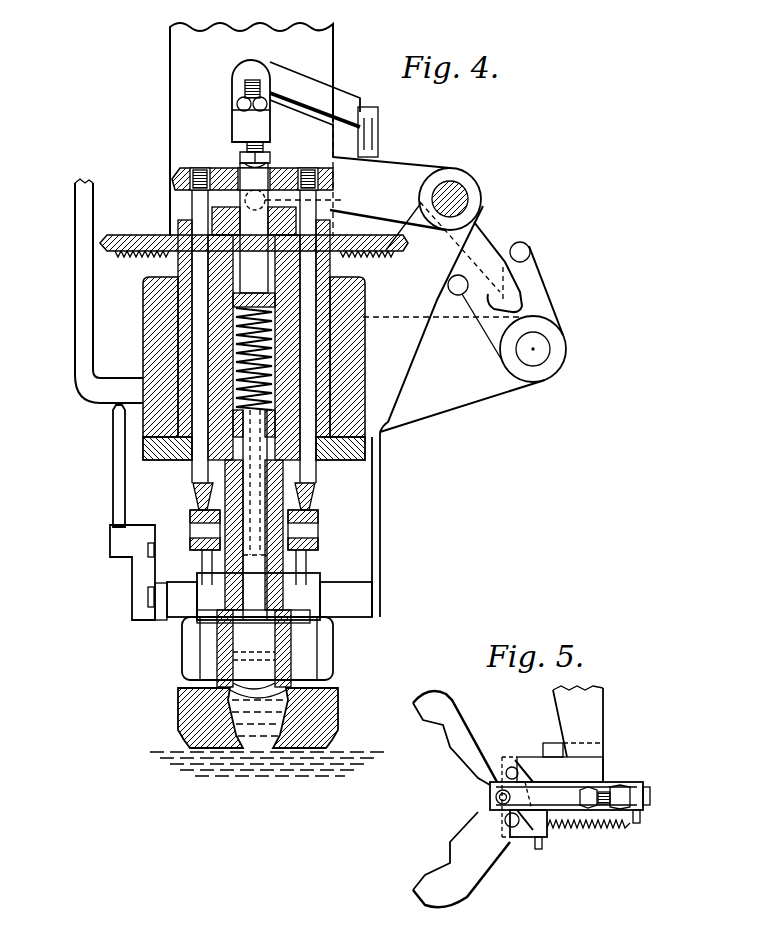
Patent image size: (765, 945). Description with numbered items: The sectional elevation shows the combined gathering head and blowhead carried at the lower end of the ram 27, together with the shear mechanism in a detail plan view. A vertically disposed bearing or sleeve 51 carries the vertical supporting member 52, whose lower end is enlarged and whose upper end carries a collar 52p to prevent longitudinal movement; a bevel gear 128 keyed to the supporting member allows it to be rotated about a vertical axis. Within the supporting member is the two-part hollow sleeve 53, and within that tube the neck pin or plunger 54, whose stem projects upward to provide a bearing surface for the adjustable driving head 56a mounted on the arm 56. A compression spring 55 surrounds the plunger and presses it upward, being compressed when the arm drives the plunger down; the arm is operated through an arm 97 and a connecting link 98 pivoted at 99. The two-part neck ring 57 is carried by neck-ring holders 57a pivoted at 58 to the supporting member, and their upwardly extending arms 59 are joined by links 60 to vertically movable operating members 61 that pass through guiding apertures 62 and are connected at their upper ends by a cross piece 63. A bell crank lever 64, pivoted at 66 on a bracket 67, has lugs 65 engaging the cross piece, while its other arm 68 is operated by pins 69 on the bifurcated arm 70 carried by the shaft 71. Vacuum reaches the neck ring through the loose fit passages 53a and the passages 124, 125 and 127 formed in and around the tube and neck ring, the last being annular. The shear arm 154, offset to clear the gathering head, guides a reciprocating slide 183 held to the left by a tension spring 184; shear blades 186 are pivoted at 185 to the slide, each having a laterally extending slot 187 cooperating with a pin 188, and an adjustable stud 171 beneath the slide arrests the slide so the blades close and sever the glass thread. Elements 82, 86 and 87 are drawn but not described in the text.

In FIG. 4, the ram 27 is at (172, 40).
In FIG. 4, the arm 56 is at (288, 80).
In FIG. 4, the adjustable driving head 56a is at (268, 160).
In FIG. 4, the pivot 99 is at (378, 125).
In FIG. 4, the bell crank lever 64 is at (416, 172).
In FIG. 4, the pivot 66 is at (458, 202).
In FIG. 4, the lugs 65 is at (305, 200).
In FIG. 4, the bracket 67 is at (420, 340).
In FIG. 4, the other arm of bell crank lever 68 is at (488, 248).
In FIG. 4, the pins 69 is at (530, 250).
In FIG. 4, the bifurcated arm 70 is at (535, 298).
In FIG. 4, the shaft 71 is at (537, 350).
In FIG. 4, the collar 52p is at (346, 294).
In FIG. 4, the bevel gear 128 is at (133, 230).
In FIG. 4, the cross piece 63 is at (178, 172).
In FIG. 4, the guiding apertures 62 is at (166, 324).
In FIG. 4, the two-part hollow member or sleeve 53 is at (292, 362).
In FIG. 4, the vertical supporting member 52 is at (300, 350).
In FIG. 4, the neck pin or plunger 54 is at (262, 552).
In FIG. 4, the vertically disposed bearing or sleeve 51 is at (290, 338).
In FIG. 4, the compression spring 55 is at (262, 374).
In FIG. 4, the vertically movable operating members 61 is at (194, 478).
In FIG. 4, the passages 53a is at (220, 485).
In FIG. 4, the links 60 is at (190, 520).
In FIG. 4, the pivot 58 is at (322, 584).
In FIG. 4, the upwardly extending arms 59 is at (215, 566).
In FIG. 4, the arm 97 is at (362, 617).
In FIG. 4, the connecting link 98 is at (376, 504).
In FIG. 4, the neck ring 57 is at (322, 650).
In FIG. 4, the neck-ring holder 57a is at (330, 668).
In FIG. 4, the passage 124 is at (236, 630).
In FIG. 4, the passage 127 is at (220, 652).
In FIG. 4, the passages 125 is at (285, 682).
In FIG. 4, the filler base 82 is at (342, 706).
In FIG. 4, the arm 154 is at (77, 350).
In FIG. 5, the arm 154 is at (594, 722).
In FIG. 4, the bar 87 is at (114, 463).
In FIG. 4, the bracket 86 is at (136, 570).
In FIG. 5, the shear blades 186 is at (472, 716).
In FIG. 5, the pivot 185 is at (491, 800).
In FIG. 5, the slide 183 is at (632, 783).
In FIG. 5, the adjustable stud 171 is at (600, 790).
In FIG. 5, the laterally extending slot 187 is at (510, 764).
In FIG. 5, the pin 188 is at (517, 768).
In FIG. 5, the tension spring 184 is at (600, 830).